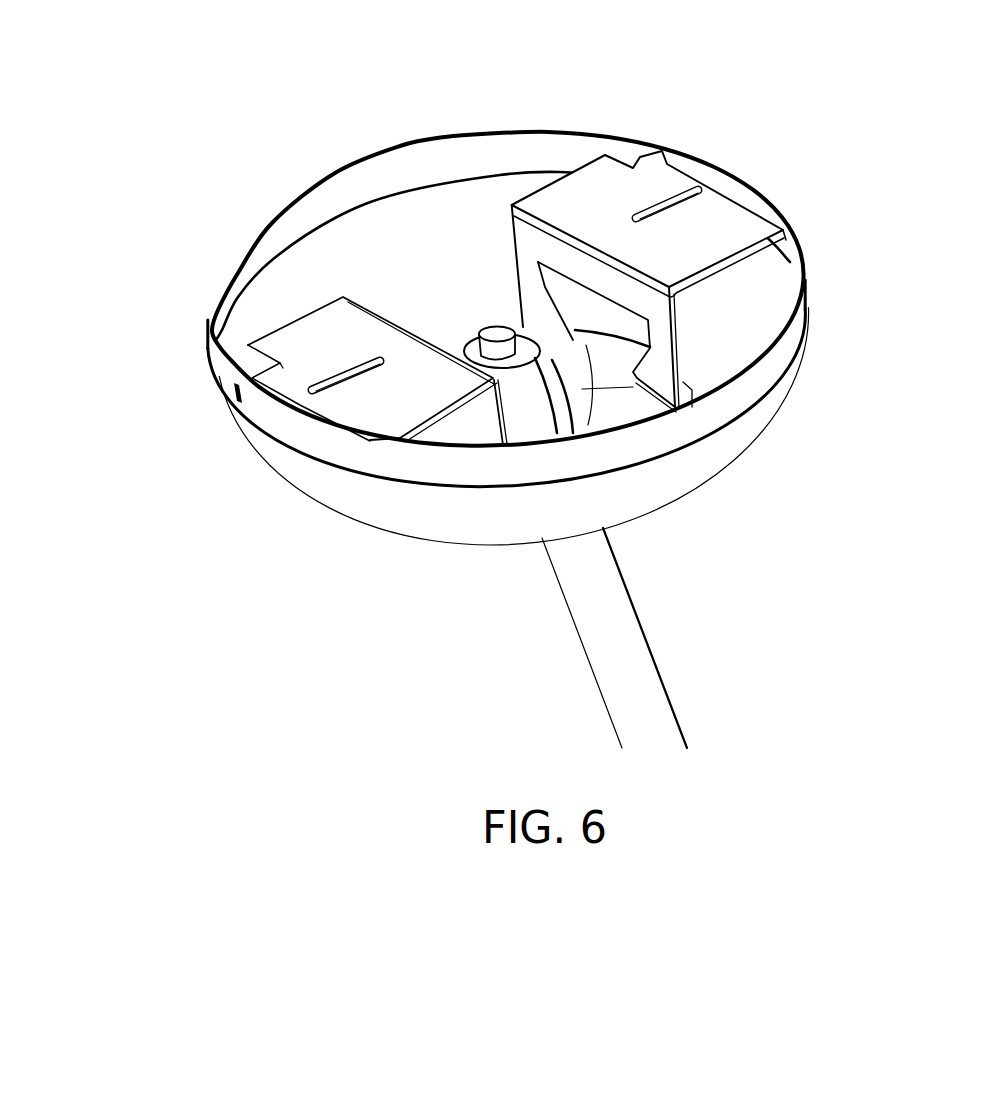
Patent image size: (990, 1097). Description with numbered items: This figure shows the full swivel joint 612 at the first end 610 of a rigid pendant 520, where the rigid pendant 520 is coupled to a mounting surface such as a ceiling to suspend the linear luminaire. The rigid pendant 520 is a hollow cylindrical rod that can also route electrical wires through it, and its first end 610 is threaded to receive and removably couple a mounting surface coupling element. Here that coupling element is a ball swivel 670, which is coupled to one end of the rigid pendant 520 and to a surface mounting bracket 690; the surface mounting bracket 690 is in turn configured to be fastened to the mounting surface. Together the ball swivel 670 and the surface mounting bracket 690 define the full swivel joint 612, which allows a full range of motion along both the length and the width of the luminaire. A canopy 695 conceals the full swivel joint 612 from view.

The first end 610 is at (586, 412).
The full swivel joint 612 is at (456, 343).
The ball swivel 670 is at (507, 329).
The surface mounting bracket 690 is at (730, 220).
The canopy 695 is at (775, 393).
The rigid pendant 520 is at (633, 663).